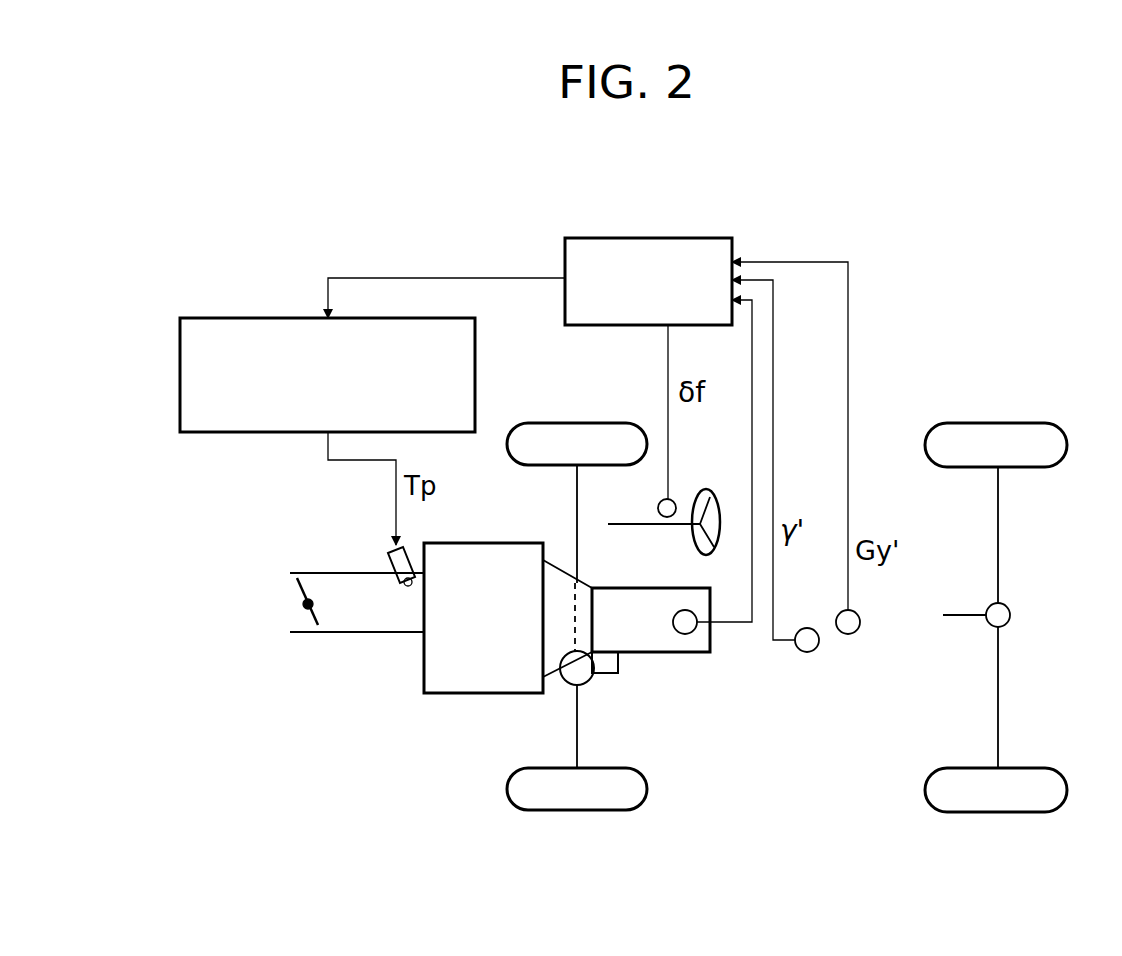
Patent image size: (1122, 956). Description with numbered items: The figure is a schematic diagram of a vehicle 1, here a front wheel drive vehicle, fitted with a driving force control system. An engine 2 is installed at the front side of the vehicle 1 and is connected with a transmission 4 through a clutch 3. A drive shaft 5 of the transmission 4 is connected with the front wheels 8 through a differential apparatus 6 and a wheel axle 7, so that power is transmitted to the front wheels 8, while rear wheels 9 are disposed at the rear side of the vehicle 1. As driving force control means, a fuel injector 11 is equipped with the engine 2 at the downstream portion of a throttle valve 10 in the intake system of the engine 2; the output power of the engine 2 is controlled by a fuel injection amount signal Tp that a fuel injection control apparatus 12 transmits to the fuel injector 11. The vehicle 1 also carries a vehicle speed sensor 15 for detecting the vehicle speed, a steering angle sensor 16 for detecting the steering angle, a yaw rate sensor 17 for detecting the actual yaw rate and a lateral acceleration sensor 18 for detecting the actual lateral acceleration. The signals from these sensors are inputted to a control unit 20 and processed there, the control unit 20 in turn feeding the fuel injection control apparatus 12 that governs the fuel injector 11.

The vehicle 1 is at (757, 760).
The engine 2 is at (466, 693).
The clutch 3 is at (565, 577).
The transmission 4 is at (667, 640).
The drive shaft 5 is at (618, 658).
The differential apparatus 6 is at (583, 677).
The wheel axle 7 is at (577, 744).
The front wheels 8 is at (637, 790).
The rear wheels 9 is at (1058, 788).
The throttle valve 10 is at (315, 617).
The fuel injector 11 is at (392, 562).
The fuel injection control apparatus 12 is at (213, 318).
The vehicle speed sensor 15 is at (693, 630).
The steering angle sensor 16 is at (676, 499).
The yaw rate sensor 17 is at (808, 645).
The lateral acceleration sensor 18 is at (858, 630).
The control unit 20 is at (703, 238).